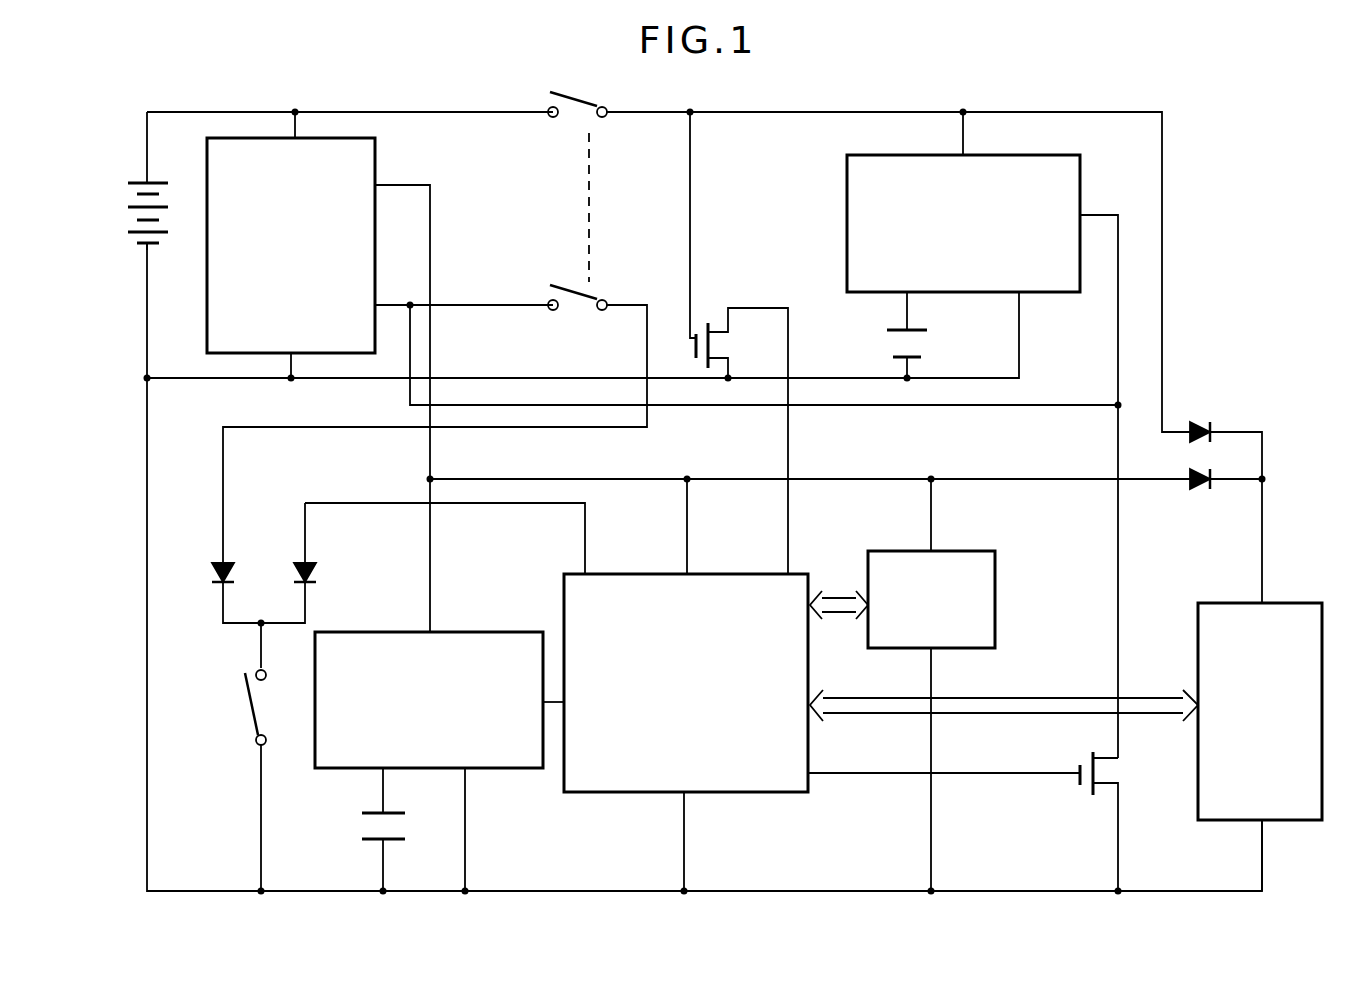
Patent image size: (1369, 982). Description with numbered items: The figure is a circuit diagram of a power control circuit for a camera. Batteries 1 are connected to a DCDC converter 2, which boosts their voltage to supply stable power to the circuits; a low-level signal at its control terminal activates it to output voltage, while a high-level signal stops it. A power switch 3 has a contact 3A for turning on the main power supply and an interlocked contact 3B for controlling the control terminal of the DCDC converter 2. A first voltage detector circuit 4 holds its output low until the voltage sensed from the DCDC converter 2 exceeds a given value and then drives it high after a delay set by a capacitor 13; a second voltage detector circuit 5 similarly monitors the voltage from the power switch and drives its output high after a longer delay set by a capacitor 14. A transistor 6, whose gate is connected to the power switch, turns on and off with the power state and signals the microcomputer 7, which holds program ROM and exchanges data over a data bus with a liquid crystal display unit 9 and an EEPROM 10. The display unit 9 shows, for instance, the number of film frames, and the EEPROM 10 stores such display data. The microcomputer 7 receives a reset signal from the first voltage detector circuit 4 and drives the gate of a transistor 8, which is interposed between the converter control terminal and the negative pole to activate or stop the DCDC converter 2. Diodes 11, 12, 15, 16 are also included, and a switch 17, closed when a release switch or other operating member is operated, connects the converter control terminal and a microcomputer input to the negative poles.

The batteries 1 is at (135, 175).
The DCDC converter 2 is at (378, 182).
The power switch 3 is at (603, 190).
The contact 3A is at (602, 105).
The contact 3B is at (600, 300).
The first voltage detector circuit 4 is at (470, 632).
The second voltage detector circuit 5 is at (1080, 185).
The transistor 6 is at (714, 320).
The microcomputer 7 is at (648, 792).
The transistor 8 is at (1112, 770).
The liquid crystal display unit 9 is at (1283, 603).
The EEPROM 10 is at (997, 568).
The diode 11 is at (1212, 430).
The diode 12 is at (1212, 482).
The capacitor 13 is at (366, 830).
The capacitor 14 is at (915, 345).
The diode 15 is at (212, 572).
The diode 16 is at (316, 575).
The switch 17 is at (250, 706).